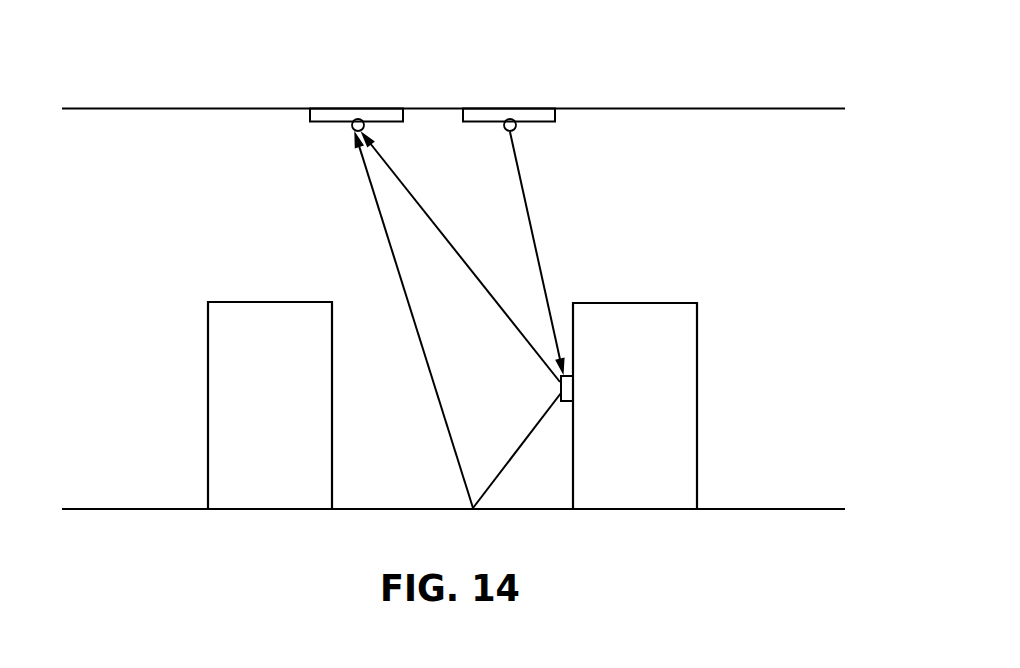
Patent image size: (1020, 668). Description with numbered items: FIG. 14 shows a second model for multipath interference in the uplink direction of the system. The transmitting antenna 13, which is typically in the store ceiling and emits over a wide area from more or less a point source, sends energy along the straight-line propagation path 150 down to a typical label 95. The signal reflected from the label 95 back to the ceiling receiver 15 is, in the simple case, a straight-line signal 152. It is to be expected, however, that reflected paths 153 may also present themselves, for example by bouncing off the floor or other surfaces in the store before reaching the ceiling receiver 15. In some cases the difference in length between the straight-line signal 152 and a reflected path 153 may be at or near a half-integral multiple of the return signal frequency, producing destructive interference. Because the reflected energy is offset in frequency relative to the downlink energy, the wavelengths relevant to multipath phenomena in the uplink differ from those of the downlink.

The ceiling receiver 15 is at (358, 117).
The transmitting antenna 13 is at (500, 117).
The straight-line propagation path 150 is at (531, 221).
The straight-line signal 152 is at (440, 227).
The reflected path 153 is at (427, 362).
The label 95 is at (573, 388).